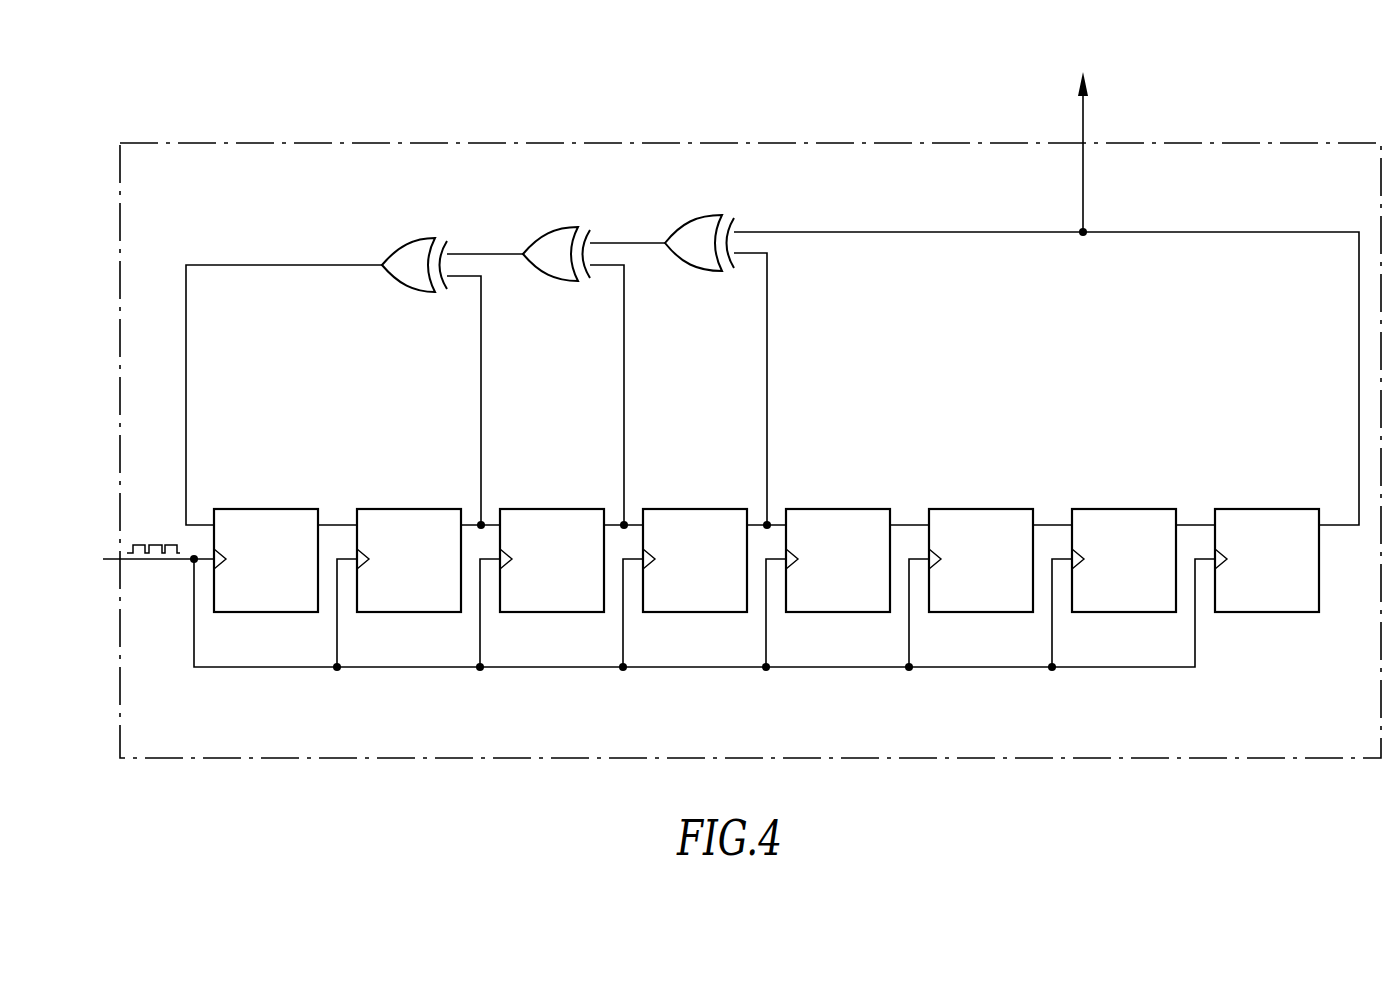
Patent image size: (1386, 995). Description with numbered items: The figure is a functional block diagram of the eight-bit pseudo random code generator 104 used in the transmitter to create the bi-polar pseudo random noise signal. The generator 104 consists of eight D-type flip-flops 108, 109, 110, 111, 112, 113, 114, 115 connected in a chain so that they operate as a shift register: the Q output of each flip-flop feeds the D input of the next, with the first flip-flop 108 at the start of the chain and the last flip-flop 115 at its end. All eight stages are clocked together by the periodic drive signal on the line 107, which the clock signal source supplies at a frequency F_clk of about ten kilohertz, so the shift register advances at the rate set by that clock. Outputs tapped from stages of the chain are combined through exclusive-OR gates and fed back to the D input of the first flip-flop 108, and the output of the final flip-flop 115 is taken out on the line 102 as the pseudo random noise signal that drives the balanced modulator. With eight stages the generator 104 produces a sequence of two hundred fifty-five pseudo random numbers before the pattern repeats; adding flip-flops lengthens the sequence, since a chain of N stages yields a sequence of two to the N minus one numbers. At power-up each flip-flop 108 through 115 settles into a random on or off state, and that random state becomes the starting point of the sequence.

The line 102 is at (1081, 122).
The pseudo random code generator 104 is at (1218, 110).
The line 107 is at (137, 543).
The flip-flop 108 is at (269, 507).
The flip-flop 109 is at (412, 507).
The flip-flop 110 is at (555, 507).
The flip-flop 111 is at (698, 507).
The flip-flop 112 is at (841, 507).
The flip-flop 113 is at (984, 507).
The flip-flop 114 is at (1127, 507).
The flip-flop 115 is at (1270, 507).